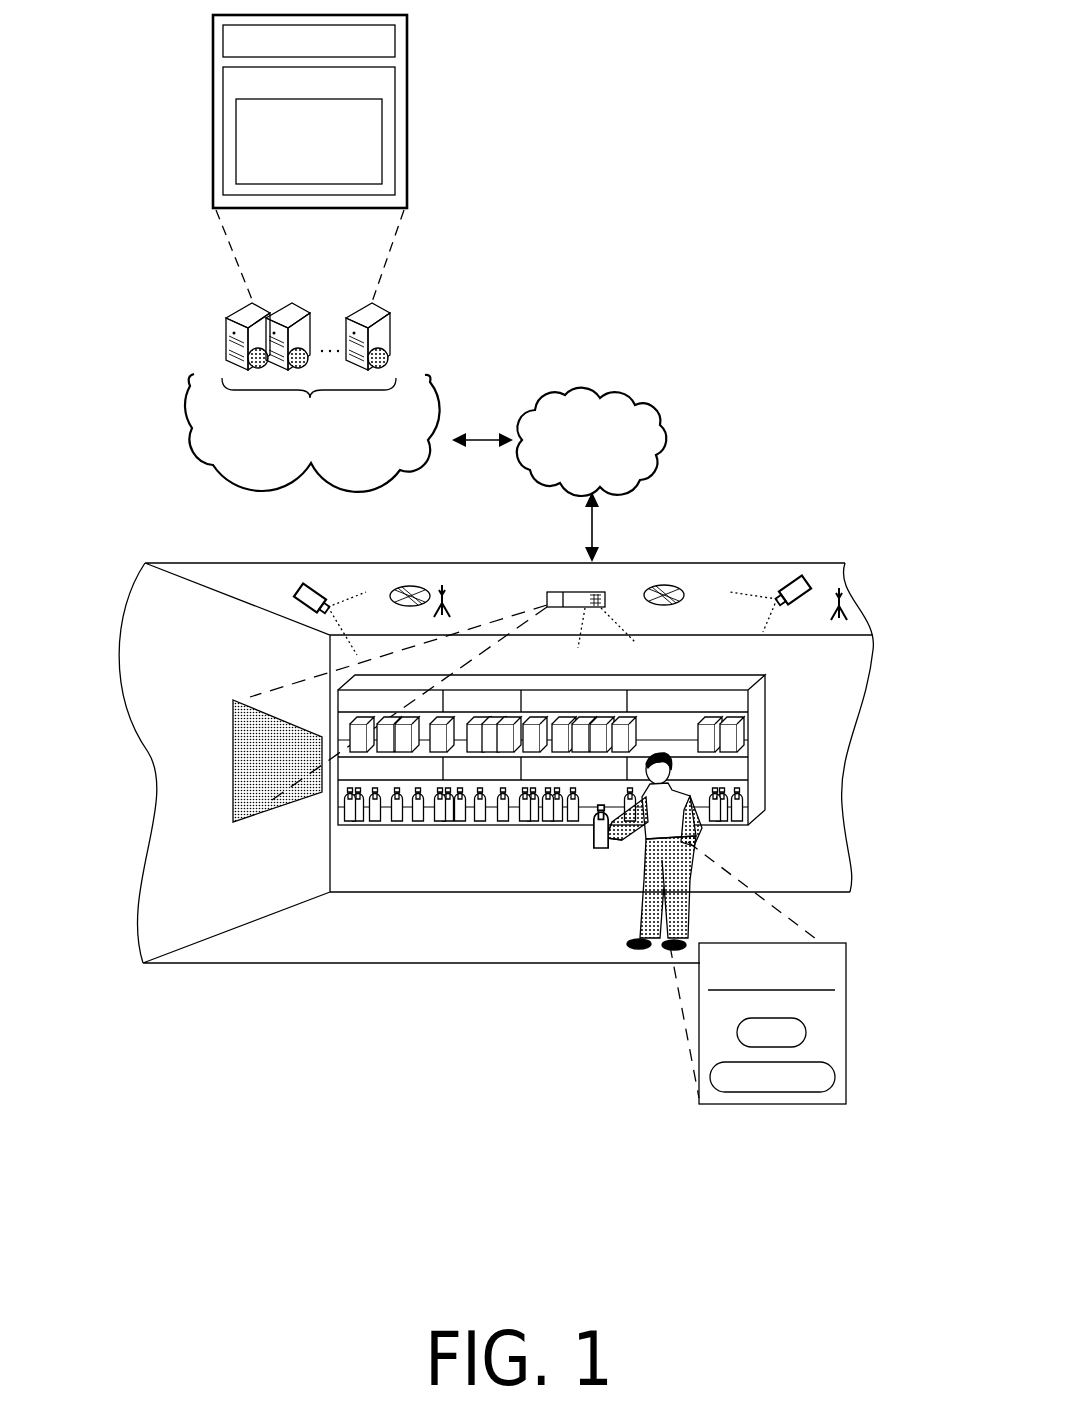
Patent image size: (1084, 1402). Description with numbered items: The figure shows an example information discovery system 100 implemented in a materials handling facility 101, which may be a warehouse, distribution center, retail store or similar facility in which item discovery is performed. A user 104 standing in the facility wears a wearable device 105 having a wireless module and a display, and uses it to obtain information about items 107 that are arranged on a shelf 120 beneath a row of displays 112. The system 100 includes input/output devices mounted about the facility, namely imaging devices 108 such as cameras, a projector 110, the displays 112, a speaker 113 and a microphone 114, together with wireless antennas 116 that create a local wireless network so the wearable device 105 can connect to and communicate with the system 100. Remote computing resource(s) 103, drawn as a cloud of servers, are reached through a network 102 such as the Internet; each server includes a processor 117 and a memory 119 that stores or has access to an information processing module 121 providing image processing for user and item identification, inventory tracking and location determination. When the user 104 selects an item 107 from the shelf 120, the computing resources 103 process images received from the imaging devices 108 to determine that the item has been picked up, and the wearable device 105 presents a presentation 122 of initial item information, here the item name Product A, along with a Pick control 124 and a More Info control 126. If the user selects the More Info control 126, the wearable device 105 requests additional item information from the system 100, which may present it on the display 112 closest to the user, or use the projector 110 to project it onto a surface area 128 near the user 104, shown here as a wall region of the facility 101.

The information discovery system 100 is at (557, 72).
The materials handling facility 101 is at (501, 736).
The network 102 is at (592, 442).
The computing resource(s) 103 is at (308, 253).
The user 104 is at (680, 838).
The wearable device 105 is at (633, 868).
The item 107 is at (590, 847).
The imaging device 108 is at (303, 583).
The projector 110 is at (575, 591).
The display 112 is at (543, 735).
The speaker 113 is at (665, 585).
The microphone 114 is at (400, 586).
The wireless antenna 116 is at (440, 585).
The processor 117 is at (309, 41).
The memory 119 is at (309, 131).
The shelf 120 is at (551, 766).
The information processing module 121 is at (309, 141).
The presentation 122 is at (754, 1030).
The Pick control 124 is at (808, 1033).
The More Info control 126 is at (822, 1092).
The surface area 128 is at (187, 902).